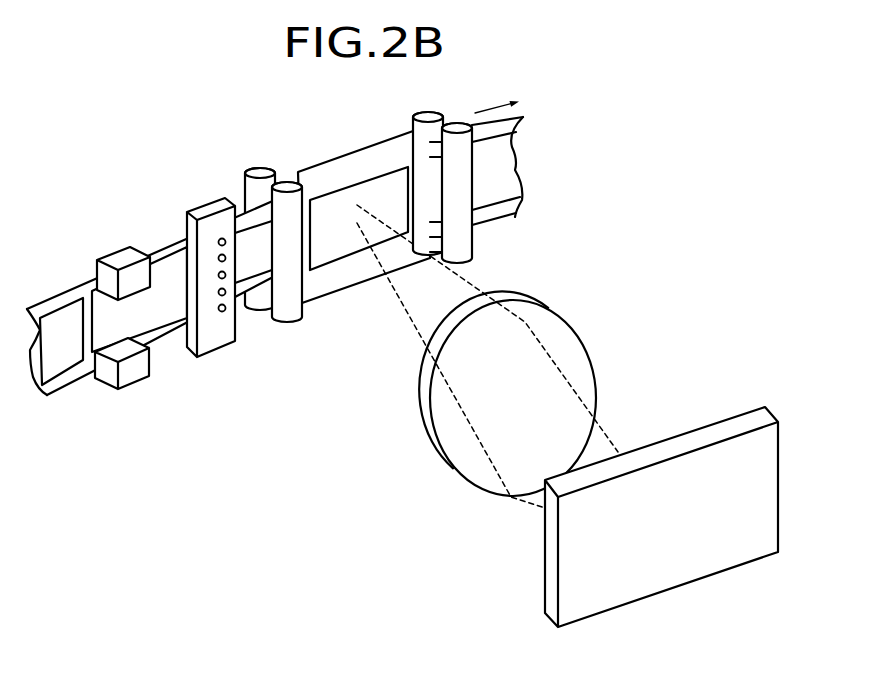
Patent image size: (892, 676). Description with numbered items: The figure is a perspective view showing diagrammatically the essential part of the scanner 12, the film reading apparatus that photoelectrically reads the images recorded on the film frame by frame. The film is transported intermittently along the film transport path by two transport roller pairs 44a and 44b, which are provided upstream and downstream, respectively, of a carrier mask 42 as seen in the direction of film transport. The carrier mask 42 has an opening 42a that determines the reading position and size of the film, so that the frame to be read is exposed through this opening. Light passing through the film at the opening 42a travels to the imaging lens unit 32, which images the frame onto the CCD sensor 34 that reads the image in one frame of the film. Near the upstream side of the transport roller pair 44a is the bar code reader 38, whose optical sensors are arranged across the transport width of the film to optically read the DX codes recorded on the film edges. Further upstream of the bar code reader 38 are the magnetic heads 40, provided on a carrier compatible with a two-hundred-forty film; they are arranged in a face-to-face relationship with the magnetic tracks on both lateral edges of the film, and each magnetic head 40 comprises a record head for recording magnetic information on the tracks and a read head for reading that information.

The film reading apparatus (scanner) 12 is at (222, 136).
The imaging lens unit 32 is at (458, 412).
The CCD sensor 34 is at (580, 563).
The bar code reader 38 is at (198, 193).
The magnetic head 40 is at (120, 263).
The carrier mask 42 is at (333, 172).
The opening 42a is at (368, 192).
The transport roller pair 44a is at (288, 312).
The transport roller pair 44b is at (458, 244).